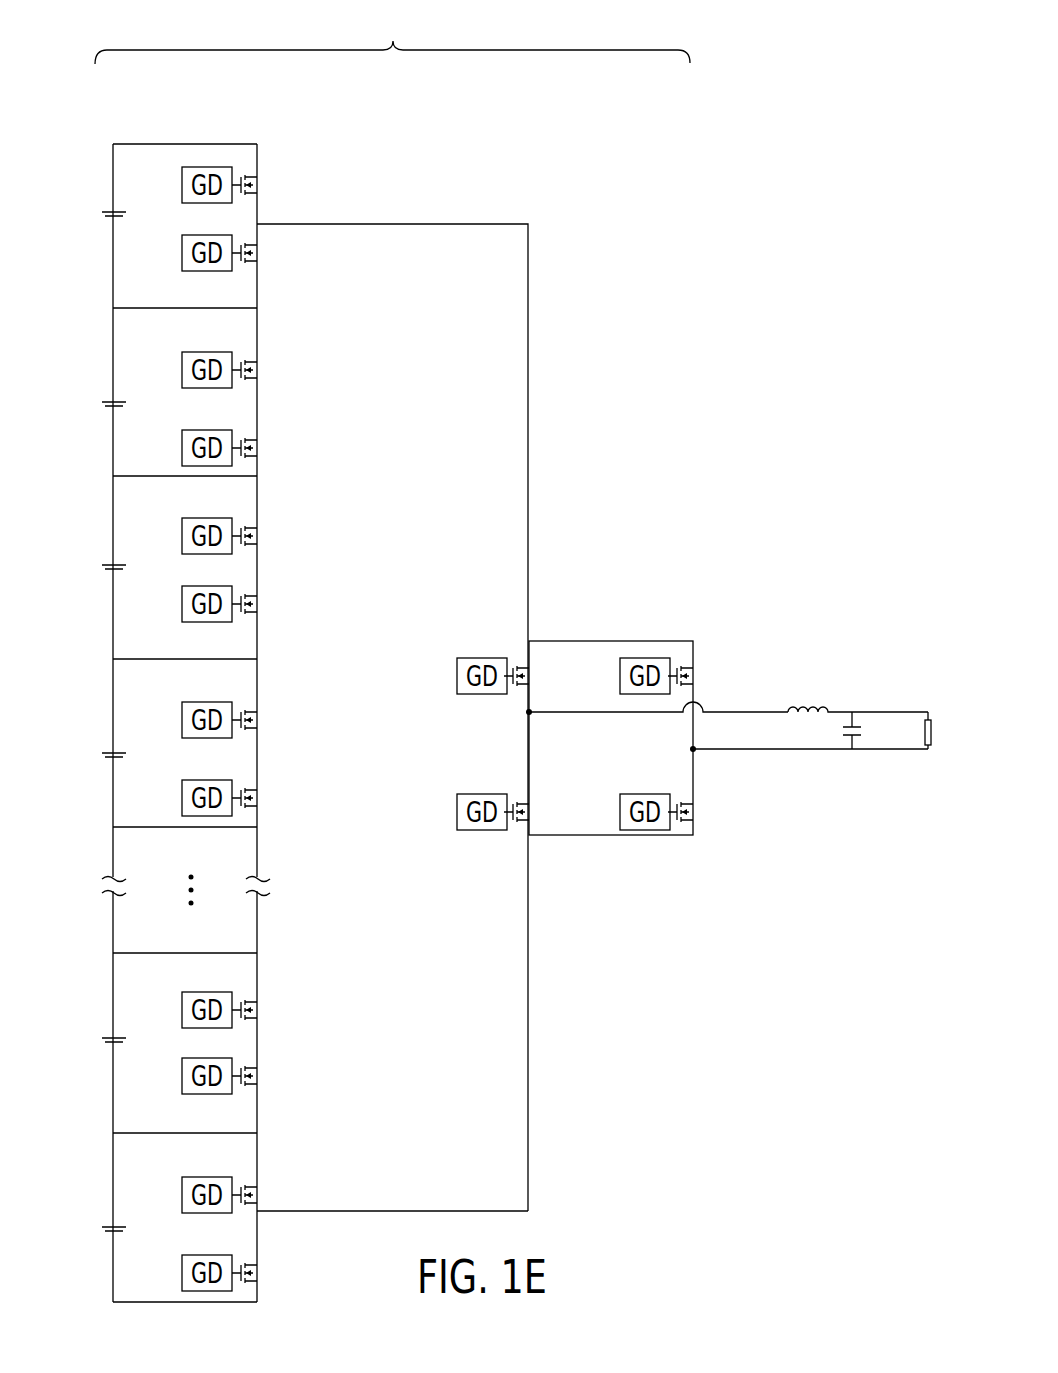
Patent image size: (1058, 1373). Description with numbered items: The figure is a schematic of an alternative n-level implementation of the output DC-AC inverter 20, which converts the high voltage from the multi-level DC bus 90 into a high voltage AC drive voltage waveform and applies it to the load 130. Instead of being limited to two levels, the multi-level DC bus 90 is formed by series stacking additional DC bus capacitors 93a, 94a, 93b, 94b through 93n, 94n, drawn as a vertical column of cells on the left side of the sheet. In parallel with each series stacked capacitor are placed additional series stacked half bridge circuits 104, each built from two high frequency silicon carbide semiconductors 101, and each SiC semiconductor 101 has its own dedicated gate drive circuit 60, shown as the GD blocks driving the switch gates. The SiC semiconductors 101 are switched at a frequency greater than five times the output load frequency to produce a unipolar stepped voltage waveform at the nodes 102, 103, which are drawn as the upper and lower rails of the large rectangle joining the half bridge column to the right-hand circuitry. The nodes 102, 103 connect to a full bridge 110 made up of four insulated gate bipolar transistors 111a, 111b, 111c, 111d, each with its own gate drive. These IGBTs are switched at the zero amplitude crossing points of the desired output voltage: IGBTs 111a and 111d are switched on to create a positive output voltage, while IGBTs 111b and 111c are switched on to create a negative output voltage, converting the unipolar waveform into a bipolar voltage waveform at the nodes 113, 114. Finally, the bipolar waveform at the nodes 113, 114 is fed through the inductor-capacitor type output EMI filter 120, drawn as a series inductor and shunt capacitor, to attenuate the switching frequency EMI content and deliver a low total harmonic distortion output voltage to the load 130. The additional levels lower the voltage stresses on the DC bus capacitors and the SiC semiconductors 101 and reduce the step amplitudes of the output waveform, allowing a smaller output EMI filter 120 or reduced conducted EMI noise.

The output DC-AC inverter 20 is at (392, 34).
The multi-level DC bus 90 is at (91, 146).
The series stacked half bridge circuits 104 is at (251, 115).
The DC bus capacitor 93a is at (103, 212).
The DC bus capacitor 94a is at (103, 402).
The DC bus capacitor 93b is at (103, 565).
The DC bus capacitor 94b is at (103, 753).
The DC bus capacitor 93n is at (103, 1038).
The DC bus capacitor 94n is at (103, 1227).
The gate drive circuit 60 is at (195, 167).
The SiC semiconductor 101 is at (252, 181).
The node 102 is at (386, 224).
The node 103 is at (386, 1211).
The full bridge 110 is at (594, 600).
The IGBT 111a is at (533, 677).
The IGBT 111b is at (697, 677).
The IGBT 111c is at (533, 812).
The IGBT 111d is at (697, 812).
The node 113 is at (531, 711).
The node 114 is at (691, 750).
The output EMI filter 120 is at (813, 692).
The load 130 is at (926, 688).